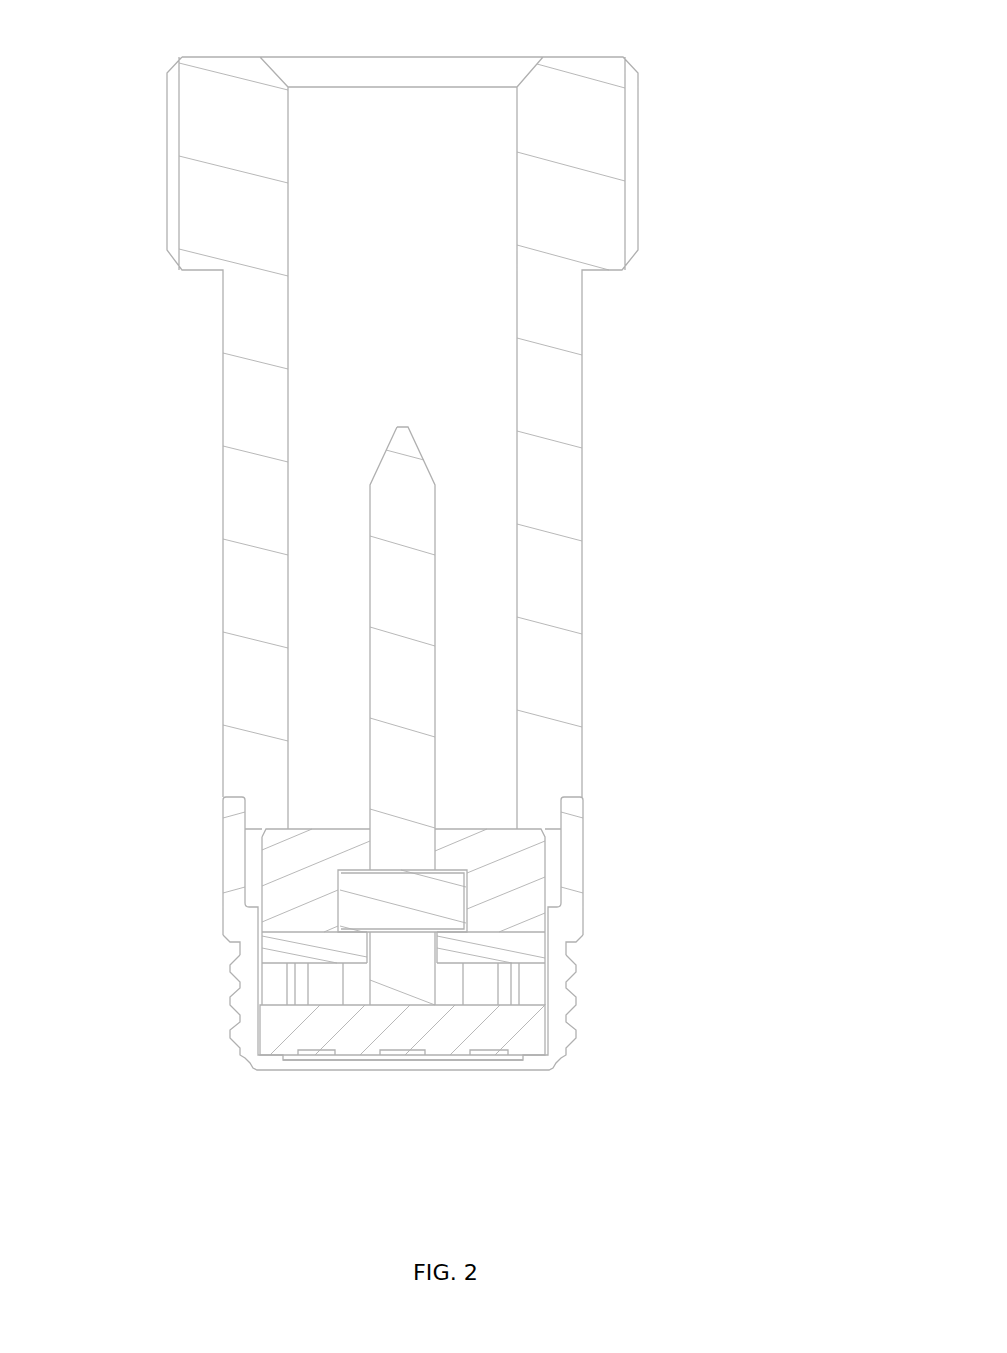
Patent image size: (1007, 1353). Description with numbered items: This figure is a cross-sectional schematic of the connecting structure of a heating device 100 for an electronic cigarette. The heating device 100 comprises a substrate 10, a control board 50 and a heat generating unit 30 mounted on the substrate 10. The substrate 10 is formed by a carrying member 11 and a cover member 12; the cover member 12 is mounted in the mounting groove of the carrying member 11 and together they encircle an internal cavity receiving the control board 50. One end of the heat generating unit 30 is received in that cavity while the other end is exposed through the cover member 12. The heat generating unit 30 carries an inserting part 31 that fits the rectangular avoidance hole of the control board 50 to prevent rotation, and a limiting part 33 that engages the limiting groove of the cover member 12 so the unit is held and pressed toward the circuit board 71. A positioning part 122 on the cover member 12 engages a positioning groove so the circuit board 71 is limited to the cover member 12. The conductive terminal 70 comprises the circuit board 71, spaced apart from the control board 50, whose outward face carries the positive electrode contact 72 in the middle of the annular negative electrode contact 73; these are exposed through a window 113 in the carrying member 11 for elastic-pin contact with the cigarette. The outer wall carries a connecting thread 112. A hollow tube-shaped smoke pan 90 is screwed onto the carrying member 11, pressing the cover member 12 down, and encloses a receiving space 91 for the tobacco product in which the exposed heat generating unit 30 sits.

The heating device 100 is at (852, 13).
The smoke pan 90 is at (537, 508).
The receiving space 91 is at (452, 309).
The heat generating unit 30 is at (494, 774).
The limiting part 33 is at (407, 881).
The inserting part 31 is at (388, 988).
The substrate 10 is at (95, 673).
The carrying member 11 is at (334, 980).
The connecting thread 112 is at (232, 1020).
The window 113 is at (372, 1062).
The cover member 12 is at (316, 843).
The positioning part 122 is at (330, 988).
The control board 50 is at (458, 949).
The conductive terminal 70 is at (691, 1072).
The circuit board 71 is at (518, 1052).
The negative electrode contact 73 is at (318, 1050).
The positive electrode contact 72 is at (403, 1052).